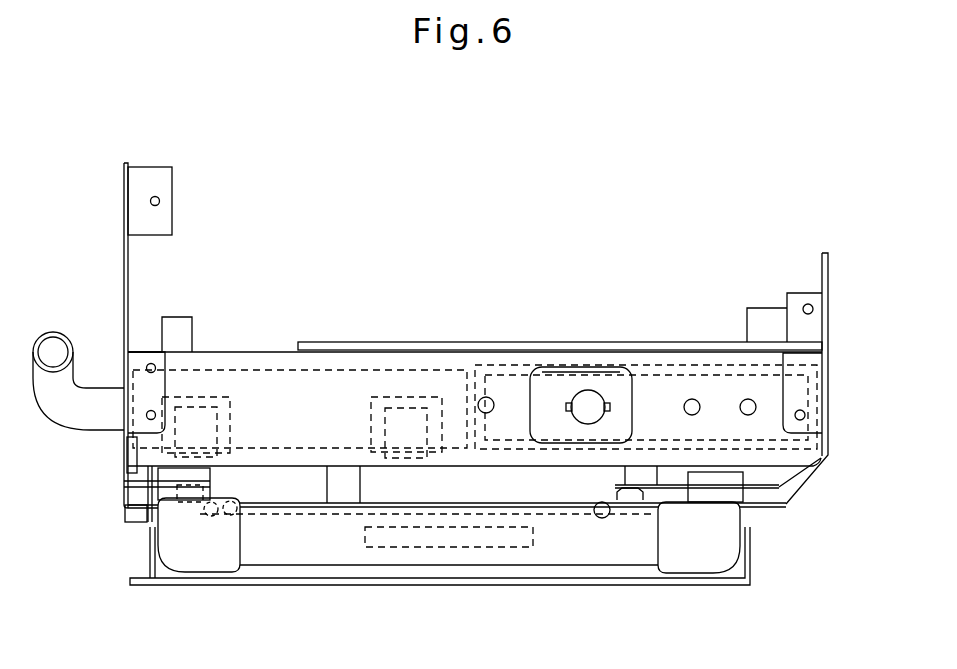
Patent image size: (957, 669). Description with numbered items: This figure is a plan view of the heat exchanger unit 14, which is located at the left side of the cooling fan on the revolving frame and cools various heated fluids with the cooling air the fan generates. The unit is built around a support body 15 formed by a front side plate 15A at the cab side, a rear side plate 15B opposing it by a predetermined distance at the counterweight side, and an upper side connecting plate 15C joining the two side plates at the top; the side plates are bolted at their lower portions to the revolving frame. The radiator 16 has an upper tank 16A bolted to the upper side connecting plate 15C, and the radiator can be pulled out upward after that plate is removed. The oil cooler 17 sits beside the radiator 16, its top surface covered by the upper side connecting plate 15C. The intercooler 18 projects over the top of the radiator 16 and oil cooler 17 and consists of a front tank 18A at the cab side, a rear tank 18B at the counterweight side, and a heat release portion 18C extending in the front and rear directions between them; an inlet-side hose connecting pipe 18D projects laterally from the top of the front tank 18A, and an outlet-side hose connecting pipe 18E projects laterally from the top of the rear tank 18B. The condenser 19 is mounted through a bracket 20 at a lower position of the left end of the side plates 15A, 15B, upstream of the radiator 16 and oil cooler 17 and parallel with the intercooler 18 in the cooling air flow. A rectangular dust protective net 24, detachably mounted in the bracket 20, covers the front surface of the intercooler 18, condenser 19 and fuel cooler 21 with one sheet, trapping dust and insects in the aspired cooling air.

The heat exchanger unit 14 is at (449, 342).
The support body 15 is at (397, 364).
The front side plate 15A is at (123, 267).
The rear side plate 15B is at (829, 393).
The upper side connecting plate 15C is at (503, 362).
The radiator 16 is at (620, 392).
The upper tank 16A is at (553, 392).
The oil cooler 17 is at (278, 393).
The intercooler 18 is at (373, 560).
The front tank 18A is at (195, 542).
The rear tank 18B is at (692, 548).
The heat release portion 18C is at (500, 558).
The hose connecting pipe at the inlet side 18D is at (167, 482).
The hose connecting pipe at the outlet side 18E is at (730, 490).
The condenser 19 is at (547, 512).
The bracket 20 is at (125, 510).
The fuel cooler 21 is at (435, 540).
The dust protective net 24 is at (304, 587).